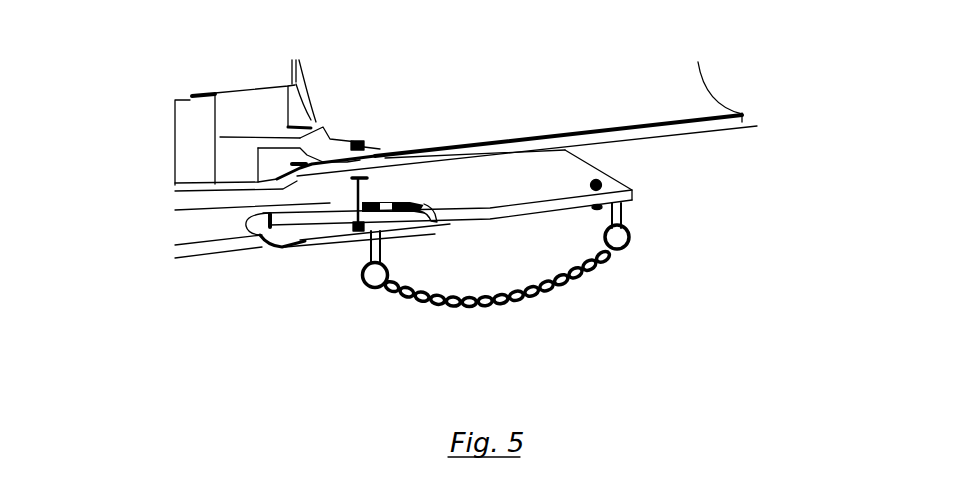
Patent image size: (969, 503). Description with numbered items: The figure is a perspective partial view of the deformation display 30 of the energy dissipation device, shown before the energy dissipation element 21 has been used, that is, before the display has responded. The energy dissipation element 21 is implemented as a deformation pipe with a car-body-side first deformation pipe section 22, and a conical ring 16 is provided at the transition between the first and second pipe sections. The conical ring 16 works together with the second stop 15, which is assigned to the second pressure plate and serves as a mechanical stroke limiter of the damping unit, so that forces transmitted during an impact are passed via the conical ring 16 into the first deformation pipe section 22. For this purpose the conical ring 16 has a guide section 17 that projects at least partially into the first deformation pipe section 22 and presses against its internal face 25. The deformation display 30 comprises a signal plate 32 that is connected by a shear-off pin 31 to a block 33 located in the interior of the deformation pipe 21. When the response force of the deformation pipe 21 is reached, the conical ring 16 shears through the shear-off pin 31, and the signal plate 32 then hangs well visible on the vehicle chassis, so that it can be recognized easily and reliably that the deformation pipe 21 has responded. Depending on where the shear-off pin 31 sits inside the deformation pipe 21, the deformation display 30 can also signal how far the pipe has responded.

The second stop 15 is at (193, 165).
The conical ring 16 is at (239, 156).
The guide section 17 is at (305, 133).
The energy dissipation element 21 is at (525, 192).
The first deformation pipe section 22 is at (643, 137).
The internal face 25 is at (633, 100).
The deformation display 30 is at (708, 281).
The shear-off pin 31 is at (357, 196).
The signal plate 32 is at (311, 232).
The block 33 is at (362, 155).